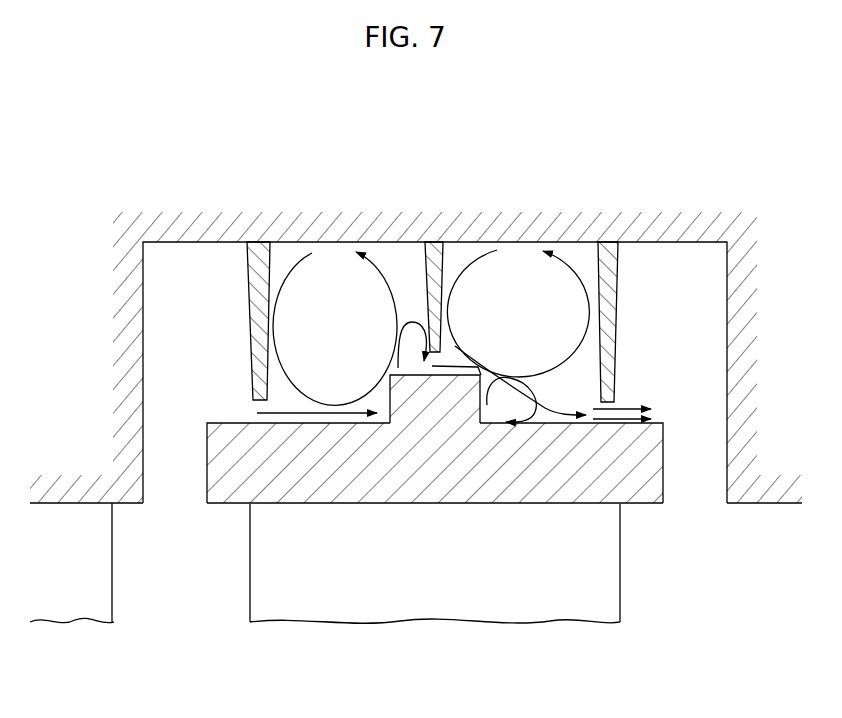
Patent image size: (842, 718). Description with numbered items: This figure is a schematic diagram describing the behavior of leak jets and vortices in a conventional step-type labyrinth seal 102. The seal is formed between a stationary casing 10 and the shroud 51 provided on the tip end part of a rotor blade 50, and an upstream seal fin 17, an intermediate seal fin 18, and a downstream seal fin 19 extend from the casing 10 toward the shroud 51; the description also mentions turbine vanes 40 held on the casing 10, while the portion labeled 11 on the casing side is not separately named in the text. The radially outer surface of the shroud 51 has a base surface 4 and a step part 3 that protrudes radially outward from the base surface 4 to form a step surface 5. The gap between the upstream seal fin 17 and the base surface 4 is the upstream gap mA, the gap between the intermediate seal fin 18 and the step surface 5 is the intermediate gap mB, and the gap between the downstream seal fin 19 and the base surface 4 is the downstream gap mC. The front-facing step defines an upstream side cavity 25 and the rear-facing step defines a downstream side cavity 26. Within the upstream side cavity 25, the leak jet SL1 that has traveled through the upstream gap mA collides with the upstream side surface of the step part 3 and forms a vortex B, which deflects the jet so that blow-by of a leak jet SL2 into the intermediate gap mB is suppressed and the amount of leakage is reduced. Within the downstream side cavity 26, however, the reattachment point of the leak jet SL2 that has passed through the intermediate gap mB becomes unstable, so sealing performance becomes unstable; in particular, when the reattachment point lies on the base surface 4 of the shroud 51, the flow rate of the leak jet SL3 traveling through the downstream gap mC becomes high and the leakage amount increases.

The casing 10 is at (149, 183).
The step-type labyrinth seal 102 is at (176, 321).
The casing 11 is at (73, 490).
The turbine vanes 40 is at (74, 612).
The base surface 4 is at (657, 422).
The shroud 51 is at (652, 500).
The step part 3 is at (413, 393).
The step surface 5 is at (433, 368).
The rotor blade 50 is at (608, 590).
The upstream seal fin 17 is at (268, 242).
The intermediate seal fin 18 is at (445, 245).
The downstream seal fin 19 is at (618, 290).
The upstream side cavity 25 is at (335, 292).
The downstream side cavity 26 is at (512, 300).
The vortex B is at (285, 373).
The upstream gap mA is at (255, 412).
The intermediate gap mB is at (426, 335).
The downstream gap mC is at (617, 402).
The first seal clearance SL1 is at (303, 413).
The leak jet SL2 is at (466, 372).
The leak jet SL3 is at (593, 424).